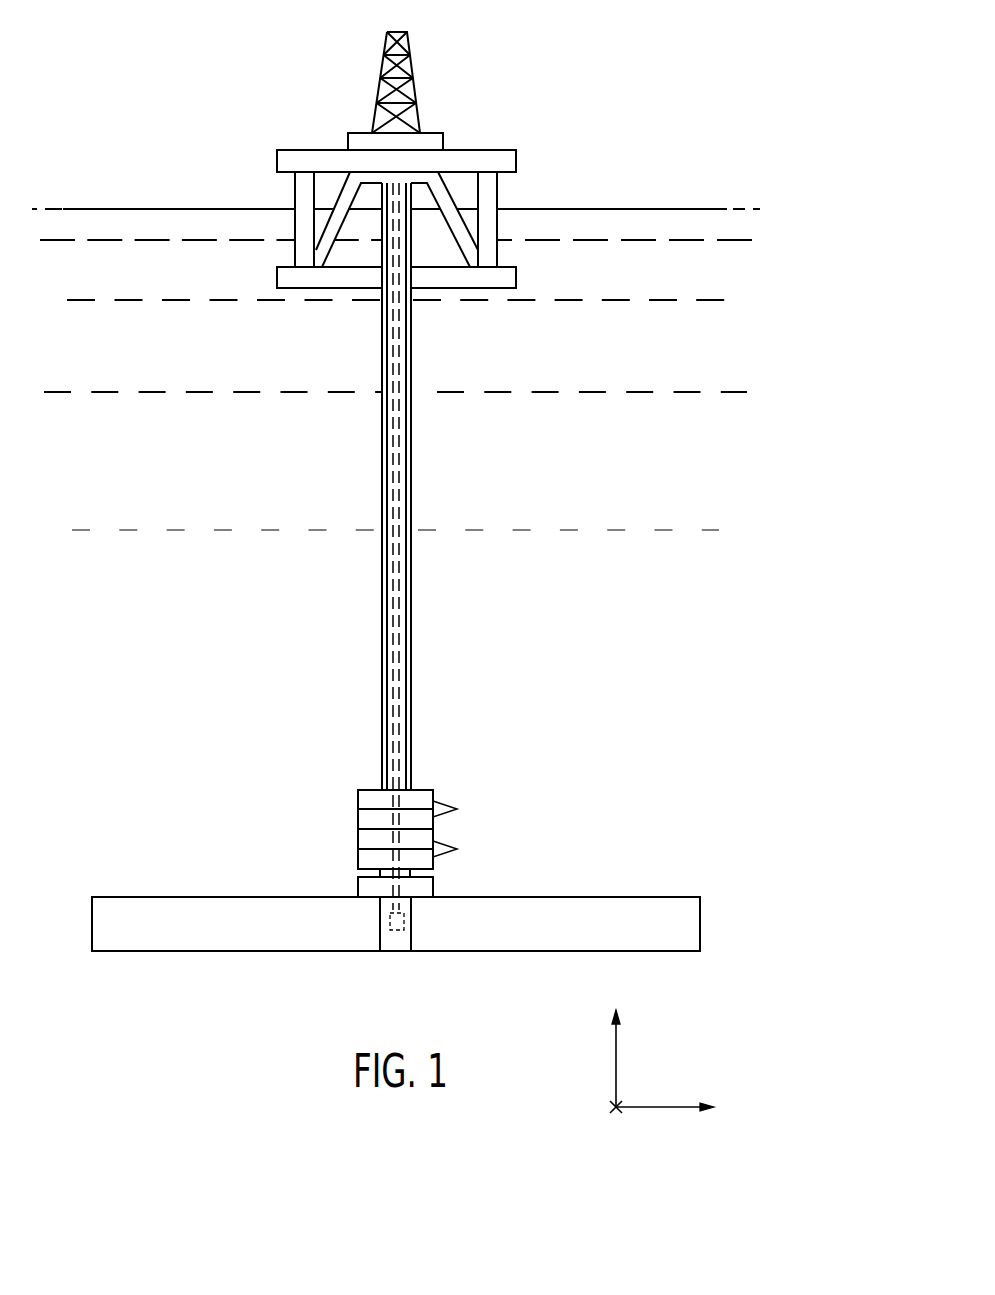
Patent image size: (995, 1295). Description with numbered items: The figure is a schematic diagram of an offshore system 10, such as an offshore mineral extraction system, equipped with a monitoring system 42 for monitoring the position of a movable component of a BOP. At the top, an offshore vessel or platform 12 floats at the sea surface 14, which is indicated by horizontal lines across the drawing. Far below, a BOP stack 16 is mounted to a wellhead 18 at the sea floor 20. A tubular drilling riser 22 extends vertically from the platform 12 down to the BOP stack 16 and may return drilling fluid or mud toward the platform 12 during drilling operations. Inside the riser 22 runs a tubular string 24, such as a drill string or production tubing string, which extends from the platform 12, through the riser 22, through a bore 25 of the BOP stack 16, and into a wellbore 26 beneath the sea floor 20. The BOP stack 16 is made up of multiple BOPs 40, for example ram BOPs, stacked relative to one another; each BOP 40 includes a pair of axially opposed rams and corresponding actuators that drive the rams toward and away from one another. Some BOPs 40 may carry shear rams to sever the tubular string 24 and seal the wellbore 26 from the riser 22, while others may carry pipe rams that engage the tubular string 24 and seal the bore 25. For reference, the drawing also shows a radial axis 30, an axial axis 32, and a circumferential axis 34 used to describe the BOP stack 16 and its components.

The offshore system 10 is at (594, 76).
The offshore vessel or platform 12 is at (432, 133).
The sea surface 14 is at (635, 205).
The BOP stack 16 is at (372, 789).
The wellhead 18 is at (358, 888).
The sea floor 20 is at (542, 897).
The tubular drilling riser 22 is at (406, 673).
The tubular string 24 is at (396, 727).
The bore 25 is at (415, 797).
The wellbore 26 is at (408, 951).
The radial axis 30 is at (616, 1065).
The axial axis 32 is at (657, 1107).
The circumferential axis 34 is at (613, 1112).
The BOP 40 is at (459, 834).
The monitoring system 42 is at (357, 762).